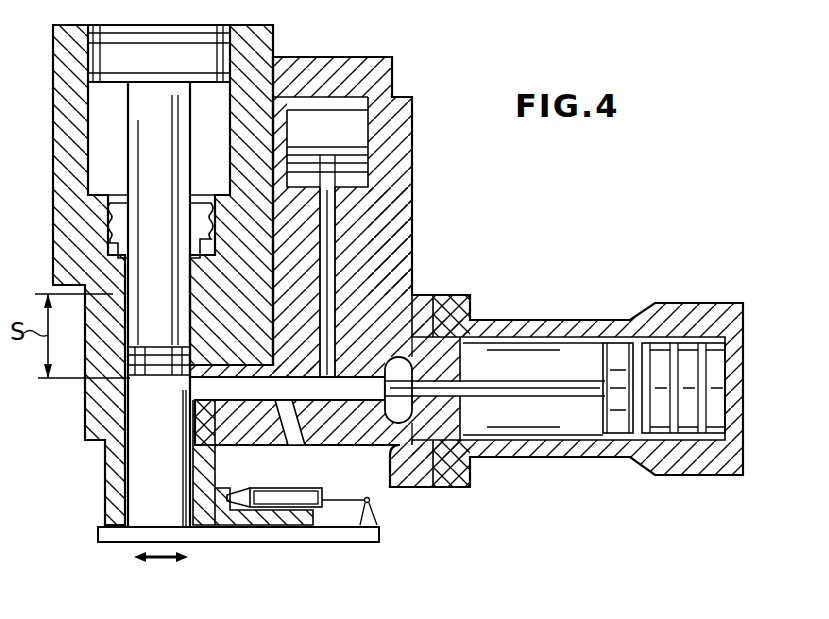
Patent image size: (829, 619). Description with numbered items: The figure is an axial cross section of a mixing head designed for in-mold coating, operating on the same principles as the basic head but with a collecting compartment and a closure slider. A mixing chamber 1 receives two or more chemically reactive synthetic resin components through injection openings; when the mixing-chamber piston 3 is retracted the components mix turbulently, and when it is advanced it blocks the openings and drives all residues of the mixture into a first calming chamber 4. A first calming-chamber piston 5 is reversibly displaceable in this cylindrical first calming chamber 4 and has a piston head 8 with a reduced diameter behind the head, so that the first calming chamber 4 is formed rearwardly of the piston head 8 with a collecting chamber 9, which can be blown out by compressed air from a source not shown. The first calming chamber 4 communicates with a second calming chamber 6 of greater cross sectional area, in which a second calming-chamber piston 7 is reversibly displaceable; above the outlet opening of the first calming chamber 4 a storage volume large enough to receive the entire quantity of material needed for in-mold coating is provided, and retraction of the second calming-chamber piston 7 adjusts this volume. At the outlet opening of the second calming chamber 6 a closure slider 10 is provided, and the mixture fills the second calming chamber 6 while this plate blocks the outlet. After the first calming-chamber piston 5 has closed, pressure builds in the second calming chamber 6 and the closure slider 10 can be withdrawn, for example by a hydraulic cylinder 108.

The mixing chamber 1 is at (343, 270).
The mixing-chamber piston 3 is at (337, 212).
The first calming chamber 4 is at (298, 393).
The first calming-chamber piston 5 is at (347, 385).
The second calming chamber 6 is at (130, 470).
The second calming-chamber piston 7 is at (122, 385).
The piston head 8 is at (365, 375).
The collecting chamber 9 is at (407, 367).
The closure slider 10 is at (240, 532).
The hydraulic cylinder 108 is at (284, 500).